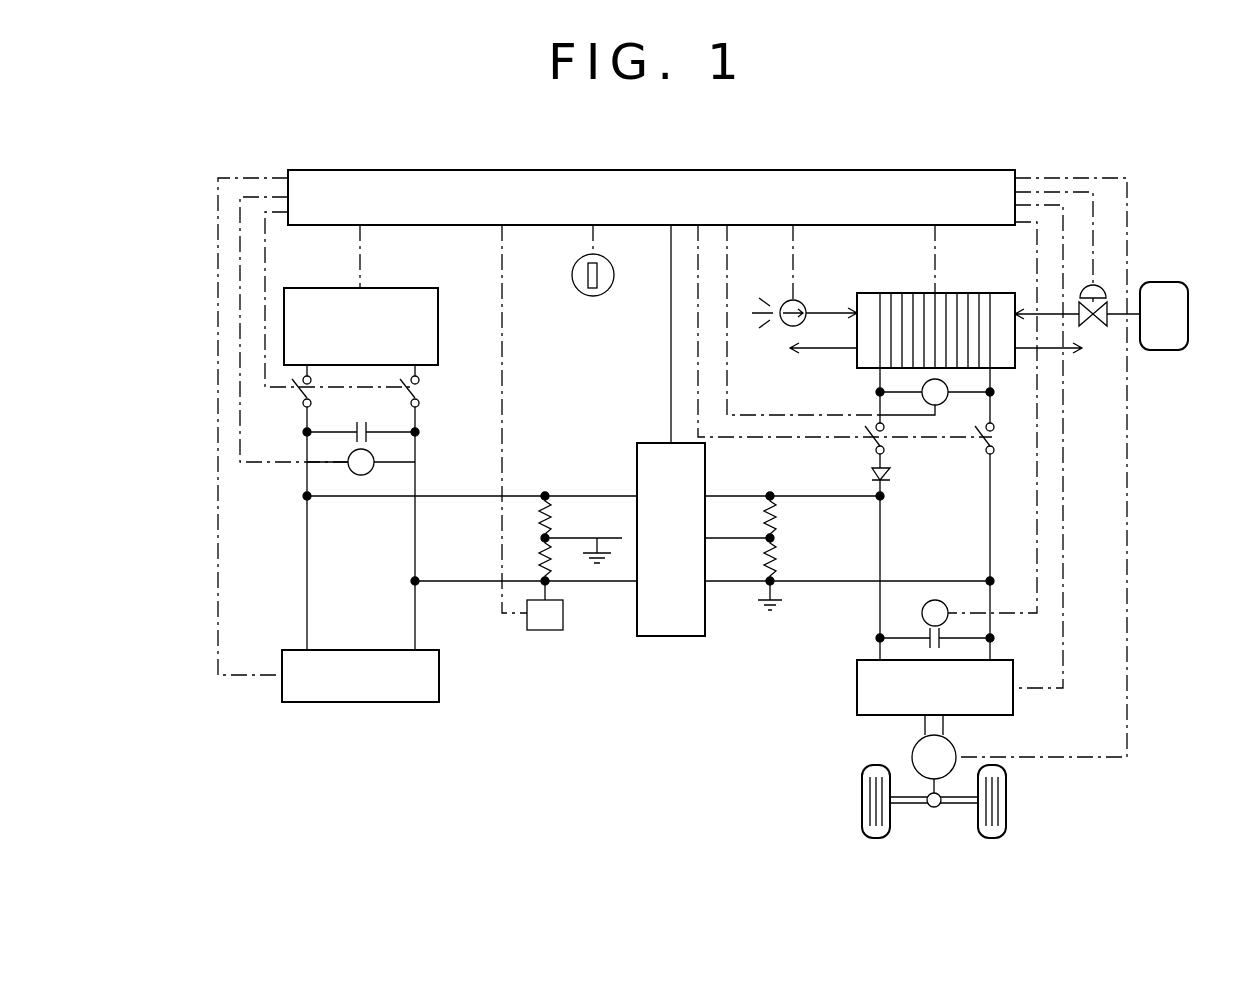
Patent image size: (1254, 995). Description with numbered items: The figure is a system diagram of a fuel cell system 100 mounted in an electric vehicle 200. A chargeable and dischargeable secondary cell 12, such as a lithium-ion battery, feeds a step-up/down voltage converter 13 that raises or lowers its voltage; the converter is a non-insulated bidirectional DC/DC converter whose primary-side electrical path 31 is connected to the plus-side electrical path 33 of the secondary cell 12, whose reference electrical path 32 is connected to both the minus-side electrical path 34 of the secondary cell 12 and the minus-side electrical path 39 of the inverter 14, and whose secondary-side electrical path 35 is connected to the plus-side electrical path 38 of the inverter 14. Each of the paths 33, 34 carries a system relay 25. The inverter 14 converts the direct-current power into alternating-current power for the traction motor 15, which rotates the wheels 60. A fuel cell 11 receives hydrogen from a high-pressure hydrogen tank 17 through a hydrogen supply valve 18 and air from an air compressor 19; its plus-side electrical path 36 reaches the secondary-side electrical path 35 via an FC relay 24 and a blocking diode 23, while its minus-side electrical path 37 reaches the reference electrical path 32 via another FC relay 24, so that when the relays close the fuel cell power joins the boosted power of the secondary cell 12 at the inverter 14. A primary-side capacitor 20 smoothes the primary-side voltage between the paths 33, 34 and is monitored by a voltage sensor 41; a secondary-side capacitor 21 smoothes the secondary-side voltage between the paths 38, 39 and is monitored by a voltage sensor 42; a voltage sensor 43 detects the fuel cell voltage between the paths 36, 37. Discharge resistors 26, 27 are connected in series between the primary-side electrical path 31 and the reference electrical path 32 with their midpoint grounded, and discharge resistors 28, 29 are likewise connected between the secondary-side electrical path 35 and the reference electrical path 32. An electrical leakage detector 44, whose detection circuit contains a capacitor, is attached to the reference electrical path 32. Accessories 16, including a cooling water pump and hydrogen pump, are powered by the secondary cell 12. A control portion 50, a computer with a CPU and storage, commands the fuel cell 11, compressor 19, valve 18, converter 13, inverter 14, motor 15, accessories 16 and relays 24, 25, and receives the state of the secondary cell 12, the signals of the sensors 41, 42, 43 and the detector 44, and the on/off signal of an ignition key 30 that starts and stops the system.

The fuel cell system 100 is at (203, 169).
The control portion 50 is at (925, 170).
The secondary cell 12 is at (420, 288).
The system relay 25 is at (418, 395).
The primary-side capacitor 20 is at (357, 423).
The plus-side electrical path of the secondary cell 33 is at (308, 446).
The minus-side electrical path of the secondary cell 34 is at (418, 462).
The voltage sensor 41 is at (350, 472).
The primary-side electrical path 31 is at (523, 494).
The reference electrical path 32 is at (465, 583).
The secondary-side electrical path 35 is at (735, 496).
The discharge resistor 26 is at (551, 512).
The discharge resistor 27 is at (550, 565).
The electrical leakage detector 44 is at (548, 632).
The step-up/down voltage converter 13 is at (671, 637).
The discharge resistor 28 is at (775, 518).
The discharge resistor 29 is at (775, 566).
The ignition key 30 is at (610, 295).
The air compressor 19 is at (806, 303).
The fuel cell 11 is at (1003, 293).
The minus-side electrical path of the fuel cell 37 is at (990, 407).
The voltage sensor 43 is at (947, 405).
The plus-side electrical path of the fuel cell 36 is at (880, 378).
The FC relay 24 is at (996, 440).
The blocking diode 23 is at (890, 472).
The plus-side electrical path of the inverter 38 is at (880, 612).
The minus-side electrical path of the inverter 39 is at (992, 622).
The secondary-side capacitor 21 is at (928, 648).
The voltage sensor 42 is at (946, 602).
The inverter 14 is at (857, 703).
The traction motor 15 is at (912, 750).
The wheels 60 is at (1010, 790).
The accessories 16 is at (374, 703).
The hydrogen supply valve 18 is at (1106, 306).
The high-pressure hydrogen tank 17 is at (1174, 282).
The electric vehicle 200 is at (1142, 694).